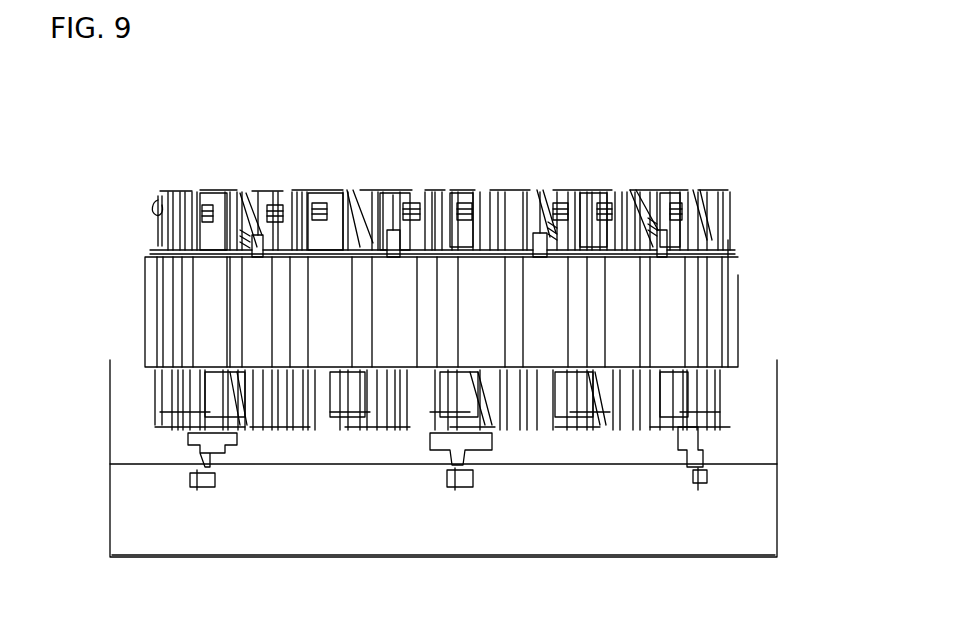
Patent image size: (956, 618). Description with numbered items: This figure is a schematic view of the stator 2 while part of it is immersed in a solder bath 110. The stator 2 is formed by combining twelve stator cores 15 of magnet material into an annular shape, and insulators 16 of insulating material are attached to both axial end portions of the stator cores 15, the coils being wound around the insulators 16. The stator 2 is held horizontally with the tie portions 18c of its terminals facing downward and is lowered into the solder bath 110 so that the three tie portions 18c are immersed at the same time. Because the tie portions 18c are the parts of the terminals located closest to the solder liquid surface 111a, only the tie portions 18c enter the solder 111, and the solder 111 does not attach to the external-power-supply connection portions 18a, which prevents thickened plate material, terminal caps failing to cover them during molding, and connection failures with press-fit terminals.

The stator 2 is at (173, 176).
The stator core 15 is at (672, 278).
The insulator 16 is at (589, 188).
The external-power-supply connection portion 18a is at (492, 437).
The tie portion 18c is at (215, 480).
The solder bath 110 is at (779, 416).
The solder 111 is at (757, 513).
The solder liquid surface 111a is at (737, 462).